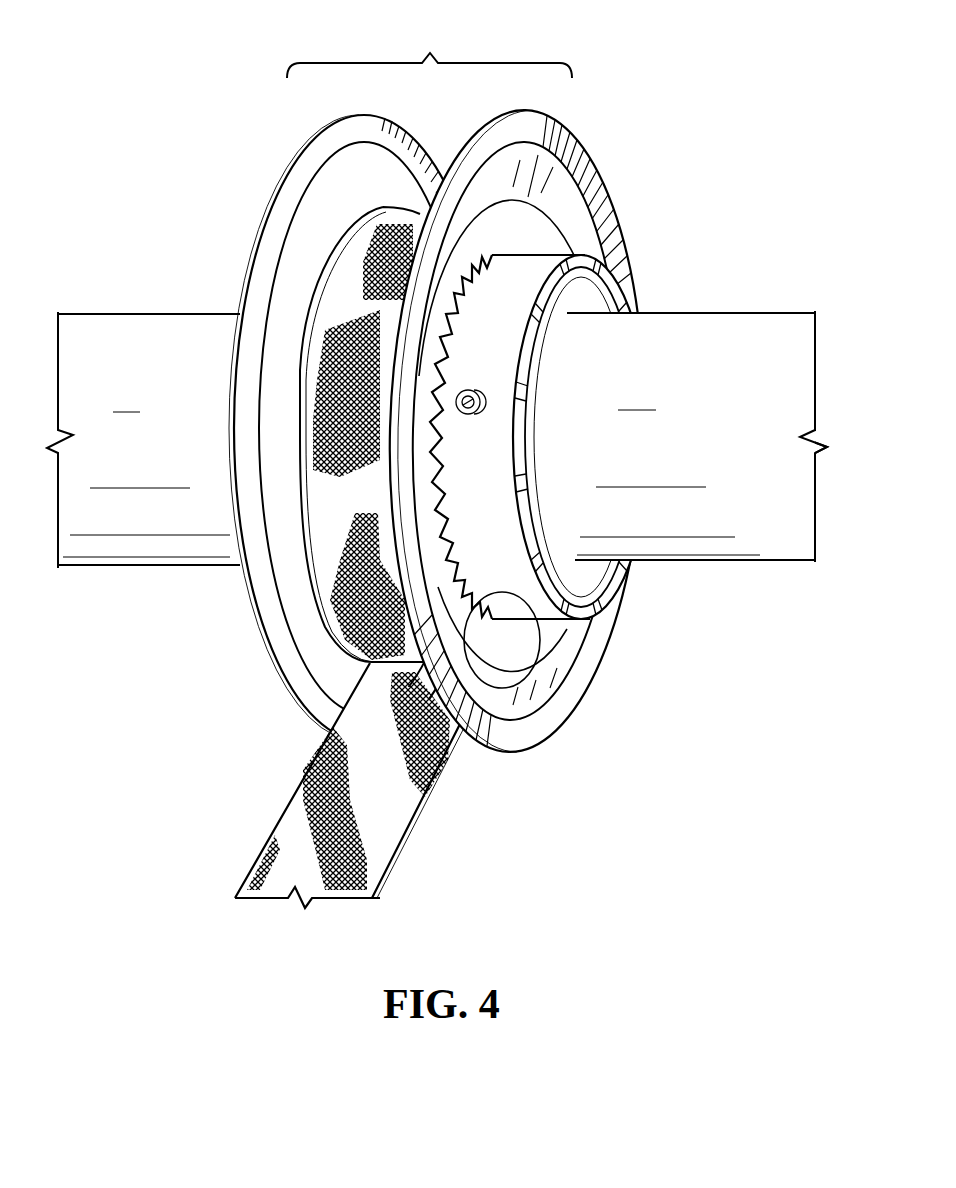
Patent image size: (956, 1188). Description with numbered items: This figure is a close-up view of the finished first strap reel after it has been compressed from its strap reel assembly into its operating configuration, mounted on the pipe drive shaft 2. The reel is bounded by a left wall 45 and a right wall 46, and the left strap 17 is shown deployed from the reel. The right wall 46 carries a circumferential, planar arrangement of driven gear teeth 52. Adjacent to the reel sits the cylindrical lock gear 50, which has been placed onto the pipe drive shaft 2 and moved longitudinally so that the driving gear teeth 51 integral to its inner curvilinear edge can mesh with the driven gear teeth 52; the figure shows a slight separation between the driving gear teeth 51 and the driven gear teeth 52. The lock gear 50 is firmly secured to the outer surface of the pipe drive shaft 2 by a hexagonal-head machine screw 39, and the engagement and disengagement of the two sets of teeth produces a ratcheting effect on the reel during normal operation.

The left wall 45 is at (258, 237).
The right wall 46 is at (568, 196).
The hexagonal-head machine screw 39 is at (474, 392).
The pipe drive shaft 2 is at (134, 543).
The cylindrical lock gear 50 is at (525, 628).
The driving gear teeth 51 is at (532, 603).
The driven gear teeth 52 is at (490, 684).
The left strap 17 is at (385, 783).